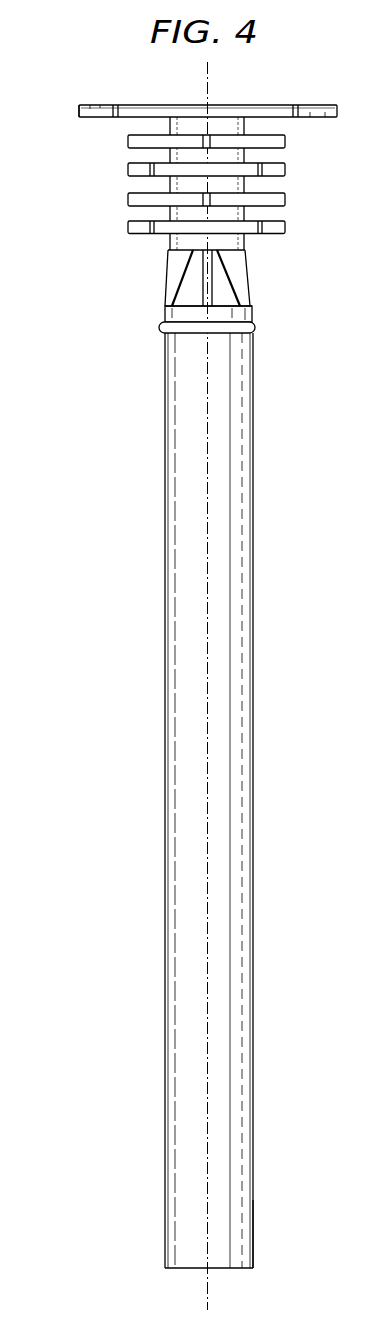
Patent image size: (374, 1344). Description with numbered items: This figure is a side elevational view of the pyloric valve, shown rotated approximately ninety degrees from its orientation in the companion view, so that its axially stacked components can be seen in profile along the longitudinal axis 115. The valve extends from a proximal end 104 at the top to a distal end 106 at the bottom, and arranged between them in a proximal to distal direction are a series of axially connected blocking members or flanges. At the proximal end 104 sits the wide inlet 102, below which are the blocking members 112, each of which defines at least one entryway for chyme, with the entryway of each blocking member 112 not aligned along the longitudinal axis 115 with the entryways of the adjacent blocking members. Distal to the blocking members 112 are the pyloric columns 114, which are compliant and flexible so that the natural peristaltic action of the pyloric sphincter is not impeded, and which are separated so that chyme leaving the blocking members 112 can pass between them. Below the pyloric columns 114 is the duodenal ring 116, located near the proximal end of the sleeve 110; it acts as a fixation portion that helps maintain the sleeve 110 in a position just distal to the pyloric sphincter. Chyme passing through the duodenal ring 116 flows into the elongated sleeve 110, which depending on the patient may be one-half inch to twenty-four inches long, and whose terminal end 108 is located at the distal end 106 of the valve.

The inlet 102 is at (78, 110).
The proximal end 104 is at (143, 105).
The distal end 106 is at (183, 1268).
The terminal end of sleeve 108 is at (253, 1218).
The sleeve 110 is at (166, 828).
The blocking members 112 is at (303, 133).
The pyloric columns 114 is at (166, 282).
The longitudinal axis 115 is at (207, 1297).
The duodenal ring 116 is at (160, 328).